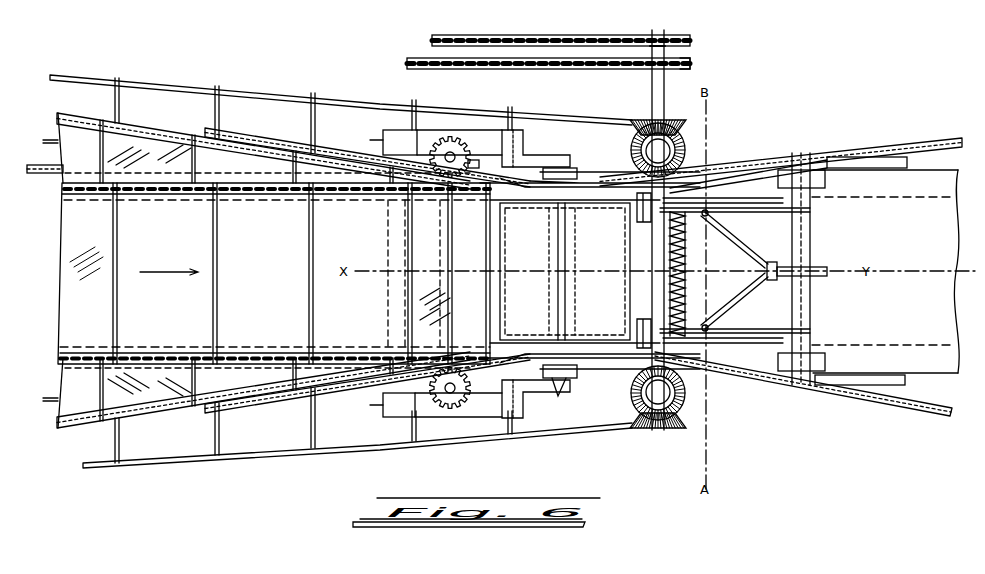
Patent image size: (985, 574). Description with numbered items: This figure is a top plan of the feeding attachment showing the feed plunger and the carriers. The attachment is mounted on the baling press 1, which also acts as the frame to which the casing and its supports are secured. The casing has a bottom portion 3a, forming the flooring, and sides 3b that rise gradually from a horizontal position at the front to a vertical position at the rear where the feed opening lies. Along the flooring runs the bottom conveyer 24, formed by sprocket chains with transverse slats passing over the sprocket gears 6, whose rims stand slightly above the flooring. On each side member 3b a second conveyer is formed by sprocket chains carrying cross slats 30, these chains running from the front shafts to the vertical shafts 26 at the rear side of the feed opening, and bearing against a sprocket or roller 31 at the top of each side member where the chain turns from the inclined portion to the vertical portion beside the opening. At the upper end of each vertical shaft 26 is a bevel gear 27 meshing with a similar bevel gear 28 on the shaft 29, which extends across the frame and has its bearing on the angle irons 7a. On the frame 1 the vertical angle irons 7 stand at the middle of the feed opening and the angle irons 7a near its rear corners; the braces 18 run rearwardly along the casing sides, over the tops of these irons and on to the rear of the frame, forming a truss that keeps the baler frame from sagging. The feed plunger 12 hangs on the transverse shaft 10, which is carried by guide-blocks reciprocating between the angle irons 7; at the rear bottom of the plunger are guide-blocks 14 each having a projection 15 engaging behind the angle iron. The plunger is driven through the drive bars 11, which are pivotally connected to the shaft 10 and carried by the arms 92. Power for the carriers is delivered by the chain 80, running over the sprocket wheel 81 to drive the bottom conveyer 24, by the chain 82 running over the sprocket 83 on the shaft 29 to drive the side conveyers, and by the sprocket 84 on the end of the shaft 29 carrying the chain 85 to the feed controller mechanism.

The baling press 1 is at (880, 199).
The bottom portion 3a is at (72, 292).
The sides 3b is at (60, 132).
The sprocket gears 6 is at (395, 143).
The vertical angle irons 7 is at (558, 392).
The angle iron 7a is at (640, 200).
The transverse shaft 10 is at (567, 311).
The drive bar 11 is at (527, 160).
The feed plunger 12 is at (508, 233).
The guide-blocks 14 is at (637, 214).
The projection 15 is at (655, 205).
The braces 18 is at (228, 138).
The conveyer 24 is at (213, 243).
The vertical shafts 26 is at (671, 152).
The bevel gears 27 is at (632, 146).
The bevel gears 28 is at (680, 121).
The shaft 29 is at (665, 96).
The cross slats 30 is at (119, 100).
The sprocket or roller 31 is at (458, 140).
The chain 80 is at (58, 166).
The sprocket wheel 81 is at (474, 160).
The chain 82 is at (418, 58).
The sprocket 83 is at (691, 62).
The sprocket 84 is at (655, 35).
The chain 85 is at (468, 36).
The arm 92 is at (424, 135).